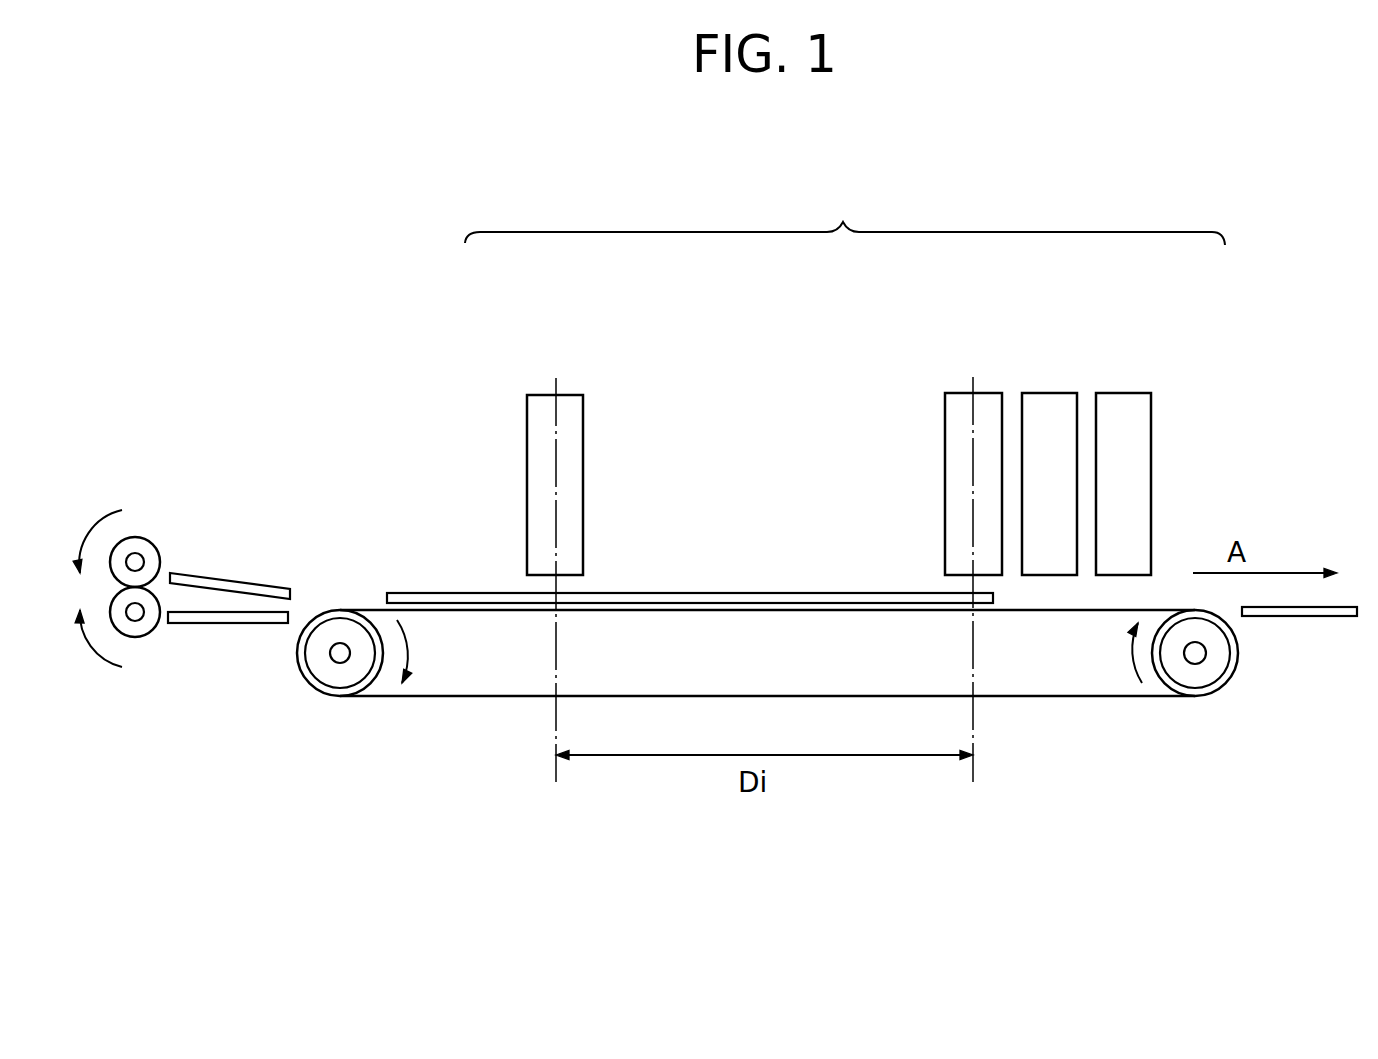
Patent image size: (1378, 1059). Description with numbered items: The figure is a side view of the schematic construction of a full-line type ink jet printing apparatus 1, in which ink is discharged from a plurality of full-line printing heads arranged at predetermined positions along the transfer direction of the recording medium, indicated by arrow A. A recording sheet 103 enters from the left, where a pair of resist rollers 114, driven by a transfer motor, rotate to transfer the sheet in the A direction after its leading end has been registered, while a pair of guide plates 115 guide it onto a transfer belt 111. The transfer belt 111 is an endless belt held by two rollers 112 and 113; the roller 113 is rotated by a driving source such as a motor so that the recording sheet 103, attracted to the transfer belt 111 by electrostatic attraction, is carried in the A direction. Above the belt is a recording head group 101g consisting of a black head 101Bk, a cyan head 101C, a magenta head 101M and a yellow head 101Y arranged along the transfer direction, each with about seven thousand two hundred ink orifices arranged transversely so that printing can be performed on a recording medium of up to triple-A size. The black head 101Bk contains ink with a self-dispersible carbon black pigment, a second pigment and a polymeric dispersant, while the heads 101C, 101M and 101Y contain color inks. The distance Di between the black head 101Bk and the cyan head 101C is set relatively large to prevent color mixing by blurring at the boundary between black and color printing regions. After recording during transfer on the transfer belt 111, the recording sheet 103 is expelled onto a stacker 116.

The printing apparatus 1 is at (352, 428).
The recording head group 101g is at (845, 214).
The black head 101Bk is at (537, 397).
The cyan head 101C is at (960, 392).
The magenta head 101M is at (1047, 392).
The yellow head 101Y is at (1127, 392).
The recording sheet 103 is at (417, 593).
The transfer belt 111 is at (1033, 693).
The roller 112 is at (337, 675).
The roller 113 is at (1207, 672).
The resist rollers 114 is at (150, 538).
The guide plates 115 is at (230, 582).
The stacker 116 is at (1312, 618).